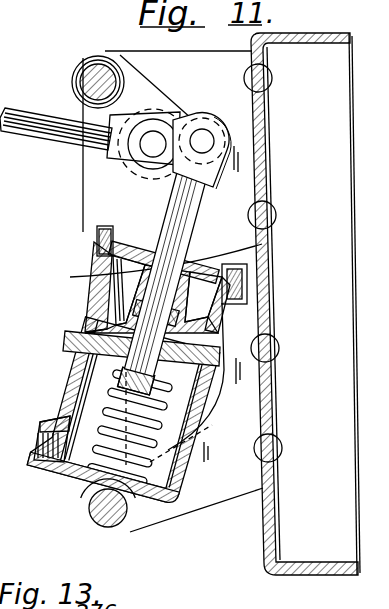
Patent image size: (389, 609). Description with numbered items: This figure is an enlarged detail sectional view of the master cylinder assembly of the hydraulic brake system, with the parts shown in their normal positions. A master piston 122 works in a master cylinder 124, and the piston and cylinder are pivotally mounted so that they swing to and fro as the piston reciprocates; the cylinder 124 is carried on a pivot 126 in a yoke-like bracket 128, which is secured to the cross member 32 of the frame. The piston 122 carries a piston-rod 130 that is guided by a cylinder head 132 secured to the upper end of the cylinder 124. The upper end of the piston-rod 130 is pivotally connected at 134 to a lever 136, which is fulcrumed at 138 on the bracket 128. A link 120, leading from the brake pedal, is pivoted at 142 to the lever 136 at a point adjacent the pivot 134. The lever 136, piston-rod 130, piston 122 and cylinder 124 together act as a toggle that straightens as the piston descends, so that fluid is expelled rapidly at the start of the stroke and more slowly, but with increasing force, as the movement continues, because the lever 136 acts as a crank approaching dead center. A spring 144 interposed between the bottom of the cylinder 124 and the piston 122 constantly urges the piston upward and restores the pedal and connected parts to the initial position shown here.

The cross member 32 is at (270, 566).
The link 120 is at (42, 128).
The master piston 122 is at (93, 333).
The master cylinder 124 is at (97, 301).
The pivot 126 is at (110, 513).
The yoke-like bracket 128 is at (215, 485).
The piston-rod 130 is at (168, 213).
The cylinder head 132 is at (262, 244).
The pivot 134 is at (202, 141).
The lever 136 is at (142, 93).
The fulcrum 138 is at (96, 58).
The pivot 142 is at (153, 144).
The spring 144 is at (68, 396).